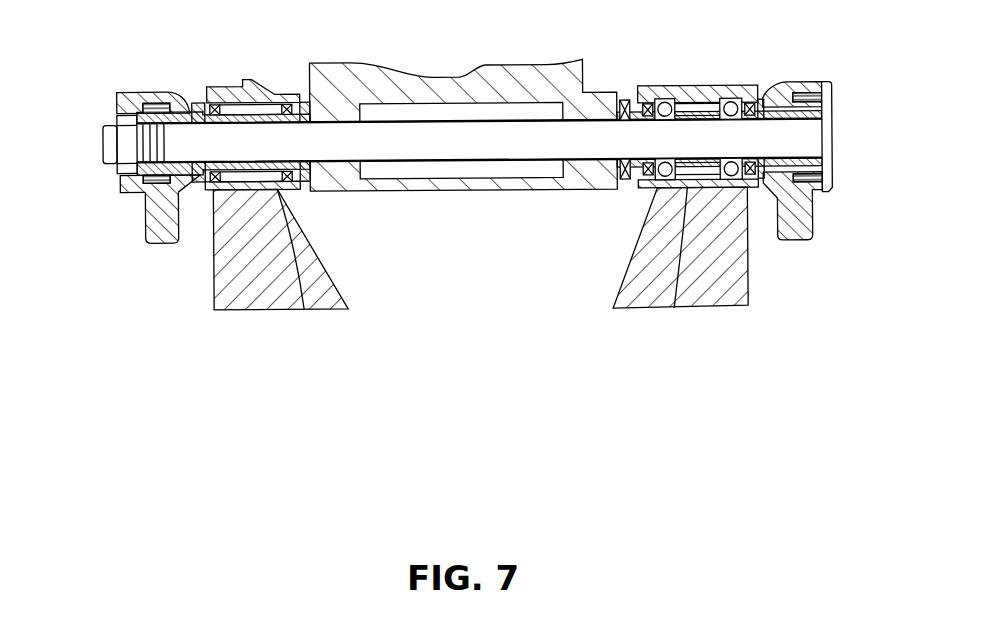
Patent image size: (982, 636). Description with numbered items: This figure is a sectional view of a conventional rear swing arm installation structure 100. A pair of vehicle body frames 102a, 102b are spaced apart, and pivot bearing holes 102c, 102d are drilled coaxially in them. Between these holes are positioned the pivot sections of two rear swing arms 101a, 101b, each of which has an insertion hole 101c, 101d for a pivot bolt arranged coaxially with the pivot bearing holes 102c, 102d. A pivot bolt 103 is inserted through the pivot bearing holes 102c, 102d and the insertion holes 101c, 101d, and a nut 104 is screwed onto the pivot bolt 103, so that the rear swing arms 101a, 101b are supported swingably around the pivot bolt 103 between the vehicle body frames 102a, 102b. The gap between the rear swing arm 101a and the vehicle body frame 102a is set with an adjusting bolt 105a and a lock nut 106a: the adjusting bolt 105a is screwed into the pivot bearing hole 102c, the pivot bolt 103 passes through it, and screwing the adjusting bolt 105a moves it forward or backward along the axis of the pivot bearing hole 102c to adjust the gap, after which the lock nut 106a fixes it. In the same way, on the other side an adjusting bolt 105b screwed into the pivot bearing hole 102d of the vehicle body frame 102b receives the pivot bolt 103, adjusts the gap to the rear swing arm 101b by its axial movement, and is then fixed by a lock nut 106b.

The rear swing arm installation structure 100 is at (504, 346).
The rear swing arm 101a is at (218, 295).
The rear swing arm 101b is at (737, 288).
The insertion hole 101c is at (303, 312).
The insertion hole 101d is at (673, 310).
The vehicle body frame 102a is at (160, 238).
The vehicle body frame 102b is at (803, 218).
The pivot bearing hole 102c is at (122, 190).
The pivot bearing hole 102d is at (777, 160).
The pivot bolt 103 is at (817, 142).
The nut 104 is at (113, 113).
The adjusting bolt 105a is at (195, 108).
The adjusting bolt 105b is at (781, 88).
The lock nut 106a is at (163, 97).
The lock nut 106b is at (820, 86).